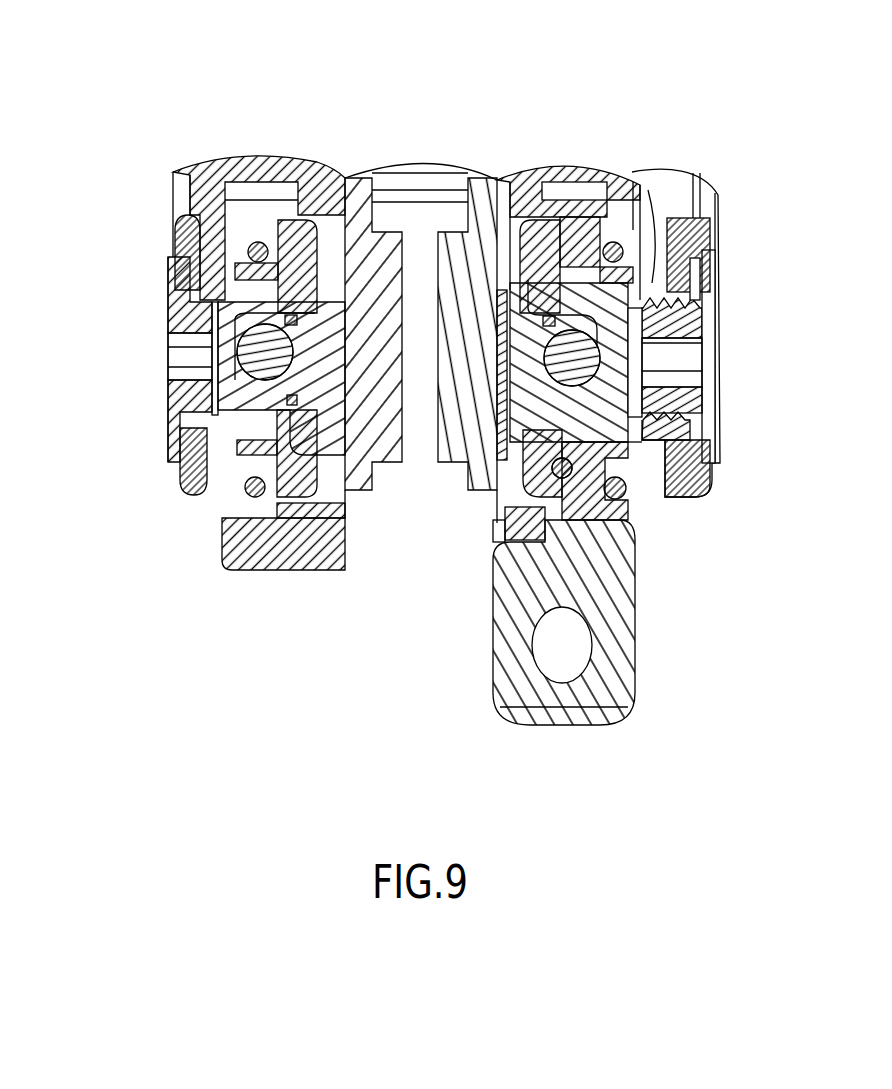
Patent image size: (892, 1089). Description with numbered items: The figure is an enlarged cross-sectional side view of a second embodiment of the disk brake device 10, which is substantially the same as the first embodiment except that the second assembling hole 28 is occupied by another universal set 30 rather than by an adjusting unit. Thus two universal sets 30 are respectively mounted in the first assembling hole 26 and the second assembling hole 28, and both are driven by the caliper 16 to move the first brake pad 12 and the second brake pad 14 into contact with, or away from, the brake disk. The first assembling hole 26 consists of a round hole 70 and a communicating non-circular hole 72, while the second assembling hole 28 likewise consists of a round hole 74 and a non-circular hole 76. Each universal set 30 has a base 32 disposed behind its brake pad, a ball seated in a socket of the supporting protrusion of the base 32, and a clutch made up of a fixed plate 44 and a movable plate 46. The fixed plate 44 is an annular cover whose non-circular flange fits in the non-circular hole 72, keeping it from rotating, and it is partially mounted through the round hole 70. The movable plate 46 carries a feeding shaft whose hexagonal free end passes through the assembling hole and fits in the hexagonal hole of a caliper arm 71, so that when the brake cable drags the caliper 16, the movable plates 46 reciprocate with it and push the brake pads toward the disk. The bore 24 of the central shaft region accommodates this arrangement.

The disk brake device 10 is at (158, 212).
The first brake pad 12 is at (520, 210).
The second brake pad 14 is at (270, 185).
The caliper 16 is at (724, 186).
The axle bore / shaft 24 is at (428, 172).
The first assembling hole 26 is at (695, 575).
The second assembling hole 28 is at (305, 618).
The universal set 30 is at (568, 78).
The base 32 is at (560, 180).
The fixed plate 44 is at (645, 172).
The movable plate 46 is at (607, 175).
The round hole 70 is at (597, 548).
The caliper arm 71 is at (703, 208).
The non-circular hole 72 is at (553, 573).
The round hole 74 is at (248, 540).
The non-circular hole 76 is at (300, 540).